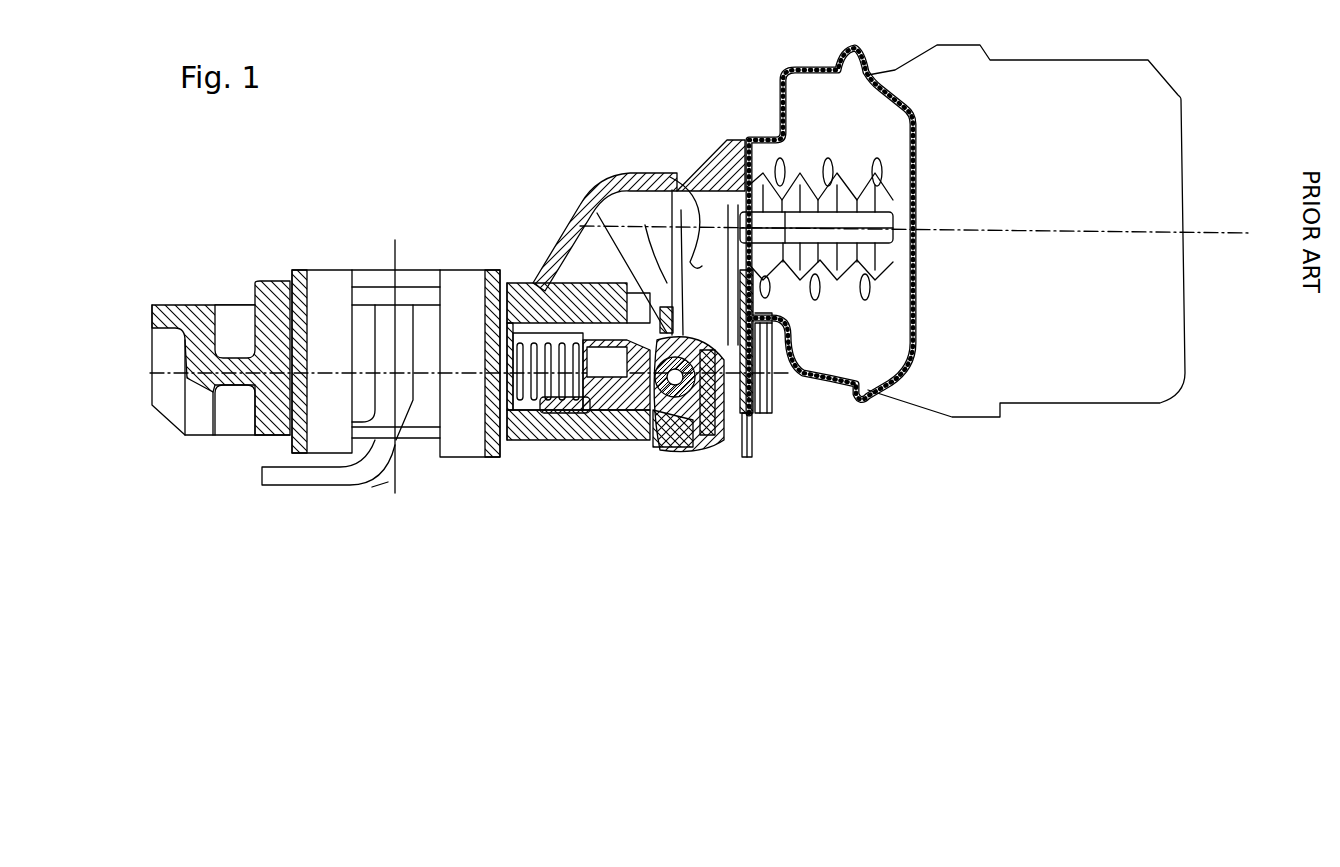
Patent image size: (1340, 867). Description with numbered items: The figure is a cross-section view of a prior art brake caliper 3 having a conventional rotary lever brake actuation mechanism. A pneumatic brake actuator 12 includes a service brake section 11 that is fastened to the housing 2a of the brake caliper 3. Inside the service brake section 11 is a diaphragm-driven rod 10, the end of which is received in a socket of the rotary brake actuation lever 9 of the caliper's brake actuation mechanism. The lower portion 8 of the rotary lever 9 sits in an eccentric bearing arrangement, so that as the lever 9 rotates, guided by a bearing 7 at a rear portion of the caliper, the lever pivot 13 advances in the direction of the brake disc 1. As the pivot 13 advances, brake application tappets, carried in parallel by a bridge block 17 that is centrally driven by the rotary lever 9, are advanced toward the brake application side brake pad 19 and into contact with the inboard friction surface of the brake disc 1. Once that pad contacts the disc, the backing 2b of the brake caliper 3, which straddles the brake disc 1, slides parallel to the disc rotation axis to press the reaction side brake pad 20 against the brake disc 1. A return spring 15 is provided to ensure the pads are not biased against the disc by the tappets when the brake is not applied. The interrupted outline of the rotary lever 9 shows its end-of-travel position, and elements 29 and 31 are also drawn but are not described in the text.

The brake disc 1 is at (380, 280).
The housing 2a is at (530, 445).
The backing 2b is at (268, 302).
The brake caliper 3 is at (597, 178).
The bearing 7 is at (723, 433).
The lower portion of the rotary lever 8 is at (693, 412).
The rotary brake actuation lever 9 is at (672, 190).
The diaphragm-driven rod 10 is at (818, 240).
The service brake section 11 is at (756, 120).
The pneumatic brake actuator 12 is at (1057, 177).
The lever pivot 13 is at (640, 405).
The return spring 15 is at (512, 360).
The bridge block 17 is at (567, 440).
The brake application side brake pad 19 is at (478, 295).
The reaction side brake pad 20 is at (310, 285).
The seal 29 is at (758, 455).
The bearing 31 is at (777, 410).